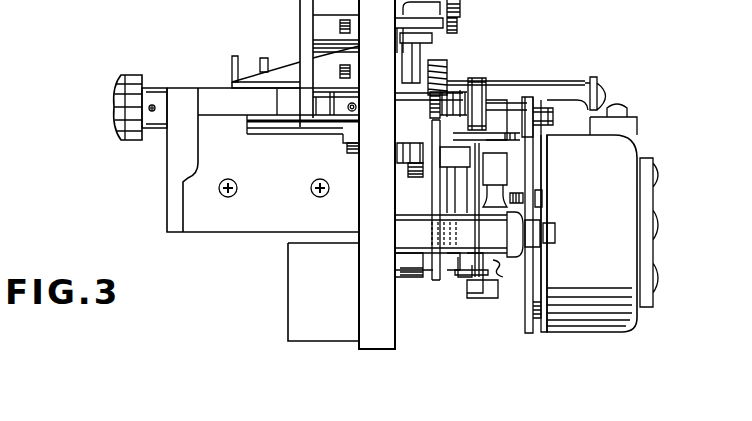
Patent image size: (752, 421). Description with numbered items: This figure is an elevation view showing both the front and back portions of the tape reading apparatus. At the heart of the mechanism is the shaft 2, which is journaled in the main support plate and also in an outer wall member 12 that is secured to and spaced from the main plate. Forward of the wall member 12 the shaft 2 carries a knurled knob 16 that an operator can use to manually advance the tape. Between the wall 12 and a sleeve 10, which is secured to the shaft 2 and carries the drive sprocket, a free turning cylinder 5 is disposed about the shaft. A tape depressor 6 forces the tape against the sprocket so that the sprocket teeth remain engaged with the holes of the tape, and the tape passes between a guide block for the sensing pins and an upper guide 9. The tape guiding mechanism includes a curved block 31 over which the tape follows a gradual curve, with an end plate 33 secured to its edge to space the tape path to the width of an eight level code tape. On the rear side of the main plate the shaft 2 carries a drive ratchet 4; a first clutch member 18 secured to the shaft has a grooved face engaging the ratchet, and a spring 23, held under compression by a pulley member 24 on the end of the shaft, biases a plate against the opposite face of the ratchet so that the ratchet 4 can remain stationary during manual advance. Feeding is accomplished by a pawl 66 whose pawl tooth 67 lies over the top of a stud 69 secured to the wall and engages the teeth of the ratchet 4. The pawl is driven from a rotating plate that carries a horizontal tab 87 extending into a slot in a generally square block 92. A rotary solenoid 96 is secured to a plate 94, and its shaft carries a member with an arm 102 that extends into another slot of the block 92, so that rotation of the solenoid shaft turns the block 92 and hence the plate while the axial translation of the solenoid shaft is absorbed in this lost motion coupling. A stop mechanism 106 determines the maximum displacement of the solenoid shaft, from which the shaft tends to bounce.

The shaft 2 is at (402, 125).
The drive ratchet 4 is at (412, 146).
The free turning cylinder 5 is at (487, 0).
The tape depressor 6 is at (207, 47).
The upper guide 9 is at (232, 83).
The sleeve 10 is at (318, 112).
The outer wall member 12 is at (173, 162).
The knurled knob 16 is at (123, 78).
The first clutch member 18 is at (410, 82).
The spring 23 is at (450, 92).
The pulley member 24 is at (470, 90).
The curved block 31 is at (258, 66).
The end plate 33 is at (232, 58).
The pawl 66 is at (412, 168).
The pawl tooth 67 is at (418, 170).
The stud 69 is at (415, 196).
The tab 87 is at (462, 278).
The square block 92 is at (493, 285).
The plate 94 is at (537, 335).
The rotary solenoid 96 is at (610, 333).
The arm 102 is at (500, 163).
The stop mechanism 106 is at (505, 186).